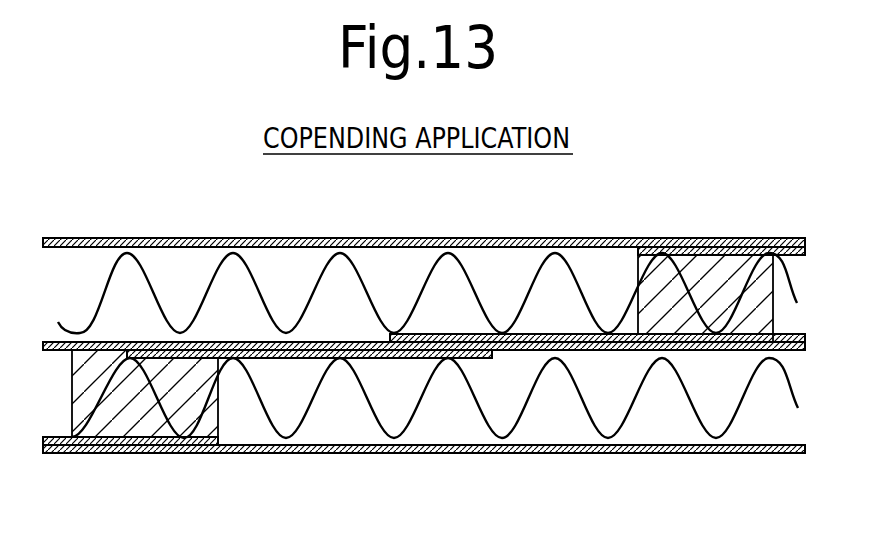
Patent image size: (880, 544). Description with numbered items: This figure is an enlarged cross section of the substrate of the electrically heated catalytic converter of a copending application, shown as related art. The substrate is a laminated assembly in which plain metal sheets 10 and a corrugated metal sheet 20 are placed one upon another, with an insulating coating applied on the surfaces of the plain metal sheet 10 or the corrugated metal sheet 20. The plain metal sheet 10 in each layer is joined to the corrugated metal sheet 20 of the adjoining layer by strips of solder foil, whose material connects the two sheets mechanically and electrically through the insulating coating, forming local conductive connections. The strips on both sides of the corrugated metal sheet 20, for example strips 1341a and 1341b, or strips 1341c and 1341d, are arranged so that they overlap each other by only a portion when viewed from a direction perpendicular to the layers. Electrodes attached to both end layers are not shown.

The plain metal sheet 10 is at (83, 238).
The corrugated metal sheet 20 is at (792, 268).
The strip of solder foil 1341a is at (72, 453).
The strip of solder foil 1341b is at (272, 358).
The strip of solder foil 1341c is at (503, 334).
The strip of solder foil 1341d is at (740, 247).